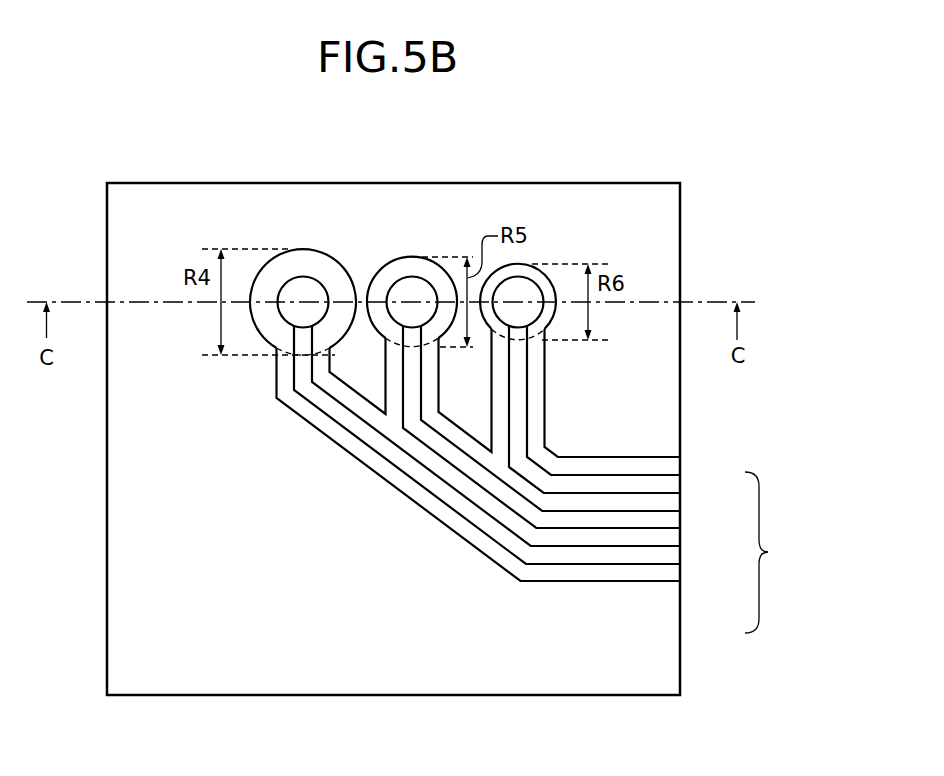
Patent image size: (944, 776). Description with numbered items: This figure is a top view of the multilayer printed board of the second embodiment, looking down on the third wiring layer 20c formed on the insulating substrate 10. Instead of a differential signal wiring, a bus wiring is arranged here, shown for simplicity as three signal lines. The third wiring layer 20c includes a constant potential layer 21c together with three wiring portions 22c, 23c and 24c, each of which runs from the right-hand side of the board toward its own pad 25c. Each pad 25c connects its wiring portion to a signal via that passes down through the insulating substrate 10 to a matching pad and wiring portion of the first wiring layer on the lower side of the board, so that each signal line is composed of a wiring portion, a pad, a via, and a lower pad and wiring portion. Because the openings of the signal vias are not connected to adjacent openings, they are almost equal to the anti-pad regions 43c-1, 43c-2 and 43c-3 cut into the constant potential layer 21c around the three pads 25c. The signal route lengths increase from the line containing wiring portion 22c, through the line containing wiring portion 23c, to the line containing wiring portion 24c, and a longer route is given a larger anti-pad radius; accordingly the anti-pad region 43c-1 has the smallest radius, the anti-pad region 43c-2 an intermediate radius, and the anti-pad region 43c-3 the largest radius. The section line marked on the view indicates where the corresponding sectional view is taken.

The insulating substrate 10 is at (107, 665).
The third wiring layer 20c is at (780, 552).
The constant potential layer 21c is at (672, 608).
The wiring portion 22c is at (672, 484).
The wiring portion 23c is at (672, 517).
The wiring portion 24c is at (672, 551).
The pad 25c is at (297, 288).
The anti-pad region 43c-1 is at (551, 282).
The anti-pad region 43c-2 is at (419, 268).
The anti-pad region 43c-3 is at (316, 262).